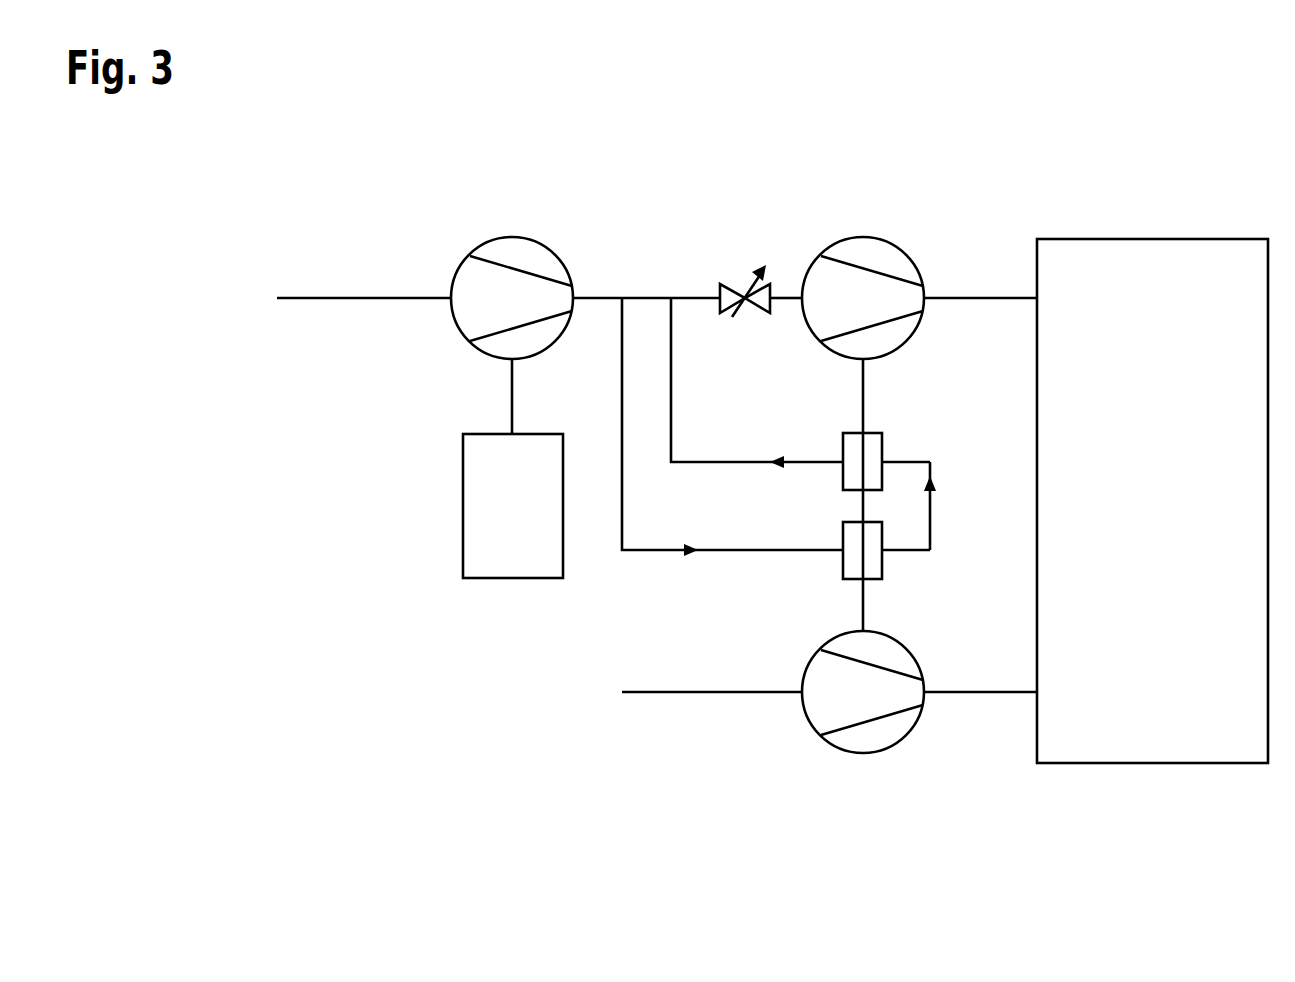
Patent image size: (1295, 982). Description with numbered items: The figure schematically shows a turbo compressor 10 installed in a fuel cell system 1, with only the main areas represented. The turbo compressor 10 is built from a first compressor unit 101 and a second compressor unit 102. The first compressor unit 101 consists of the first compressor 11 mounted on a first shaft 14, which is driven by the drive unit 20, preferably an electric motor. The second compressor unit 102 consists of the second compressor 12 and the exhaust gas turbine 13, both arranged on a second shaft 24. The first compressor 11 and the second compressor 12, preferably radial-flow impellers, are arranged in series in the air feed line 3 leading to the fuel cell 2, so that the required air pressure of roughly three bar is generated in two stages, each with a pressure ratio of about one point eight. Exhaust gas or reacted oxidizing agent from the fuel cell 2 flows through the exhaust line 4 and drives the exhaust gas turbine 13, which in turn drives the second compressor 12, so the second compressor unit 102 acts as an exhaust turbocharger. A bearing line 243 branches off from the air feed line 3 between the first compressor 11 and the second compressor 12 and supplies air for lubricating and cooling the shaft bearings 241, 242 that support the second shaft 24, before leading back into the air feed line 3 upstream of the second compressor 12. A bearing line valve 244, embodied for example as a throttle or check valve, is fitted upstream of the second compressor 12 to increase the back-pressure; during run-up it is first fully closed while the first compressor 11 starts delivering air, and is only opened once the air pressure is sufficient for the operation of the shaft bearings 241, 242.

The fuel cell system 1 is at (984, 812).
The fuel cell 2 is at (1155, 239).
The air feed line 3 is at (351, 298).
The exhaust line 4 is at (650, 697).
The turbo compressor 10 is at (625, 164).
The first compressor 11 is at (512, 237).
The second compressor 12 is at (863, 237).
The exhaust gas turbine 13 is at (865, 755).
The first shaft 14 is at (512, 398).
The drive unit 20 is at (463, 500).
The second shaft 24 is at (882, 503).
The first compressor unit 101 is at (412, 448).
The second compressor unit 102 is at (957, 163).
The shaft bearing 241 is at (882, 572).
The shaft bearing 242 is at (882, 443).
The bearing line 243 is at (652, 555).
The bearing line valve 244 is at (728, 283).